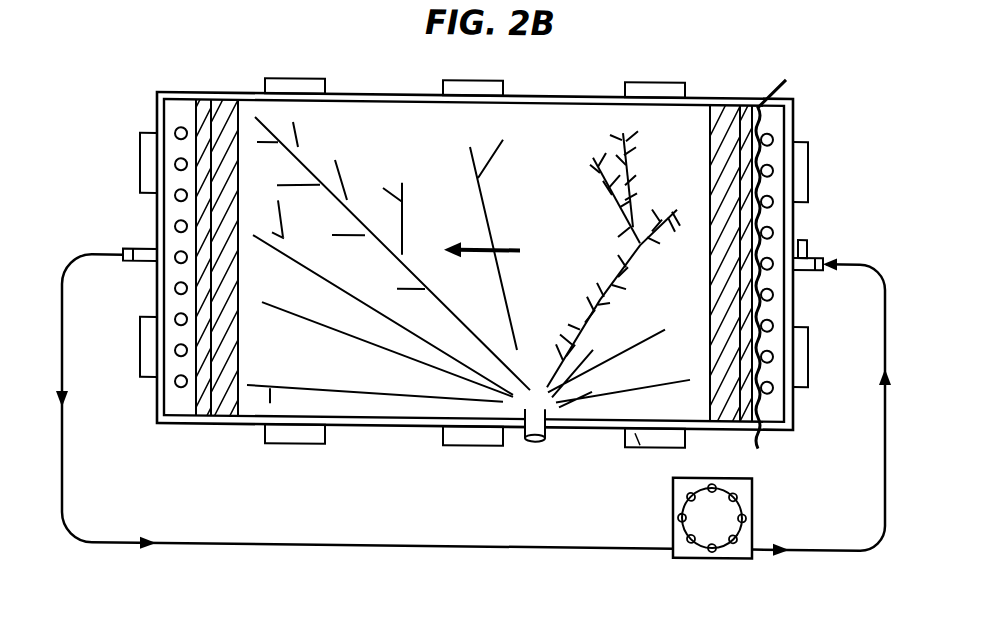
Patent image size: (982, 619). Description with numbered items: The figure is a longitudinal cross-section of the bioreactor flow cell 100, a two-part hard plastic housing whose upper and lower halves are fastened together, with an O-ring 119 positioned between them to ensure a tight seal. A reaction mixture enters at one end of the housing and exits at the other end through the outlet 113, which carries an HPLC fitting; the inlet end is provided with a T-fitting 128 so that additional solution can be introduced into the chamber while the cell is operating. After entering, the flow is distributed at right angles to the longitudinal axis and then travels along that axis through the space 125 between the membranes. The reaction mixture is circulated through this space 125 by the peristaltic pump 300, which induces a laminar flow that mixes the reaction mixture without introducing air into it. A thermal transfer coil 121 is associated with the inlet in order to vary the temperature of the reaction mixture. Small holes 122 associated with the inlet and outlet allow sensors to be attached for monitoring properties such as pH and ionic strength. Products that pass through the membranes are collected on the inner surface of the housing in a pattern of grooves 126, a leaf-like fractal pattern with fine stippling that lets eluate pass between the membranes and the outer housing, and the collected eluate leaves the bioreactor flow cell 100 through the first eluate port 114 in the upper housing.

The bioreactor flow cell 100 is at (136, 72).
The outlet 113 is at (137, 247).
The first eluate port 114 is at (540, 440).
The O-ring 119 is at (389, 432).
The thermal transfer coil 121 is at (794, 67).
The small holes 122 is at (180, 388).
The space 125 is at (640, 443).
The pattern of grooves 126 is at (576, 179).
The T-fitting 128 is at (803, 233).
The peristaltic pump 300 is at (762, 518).